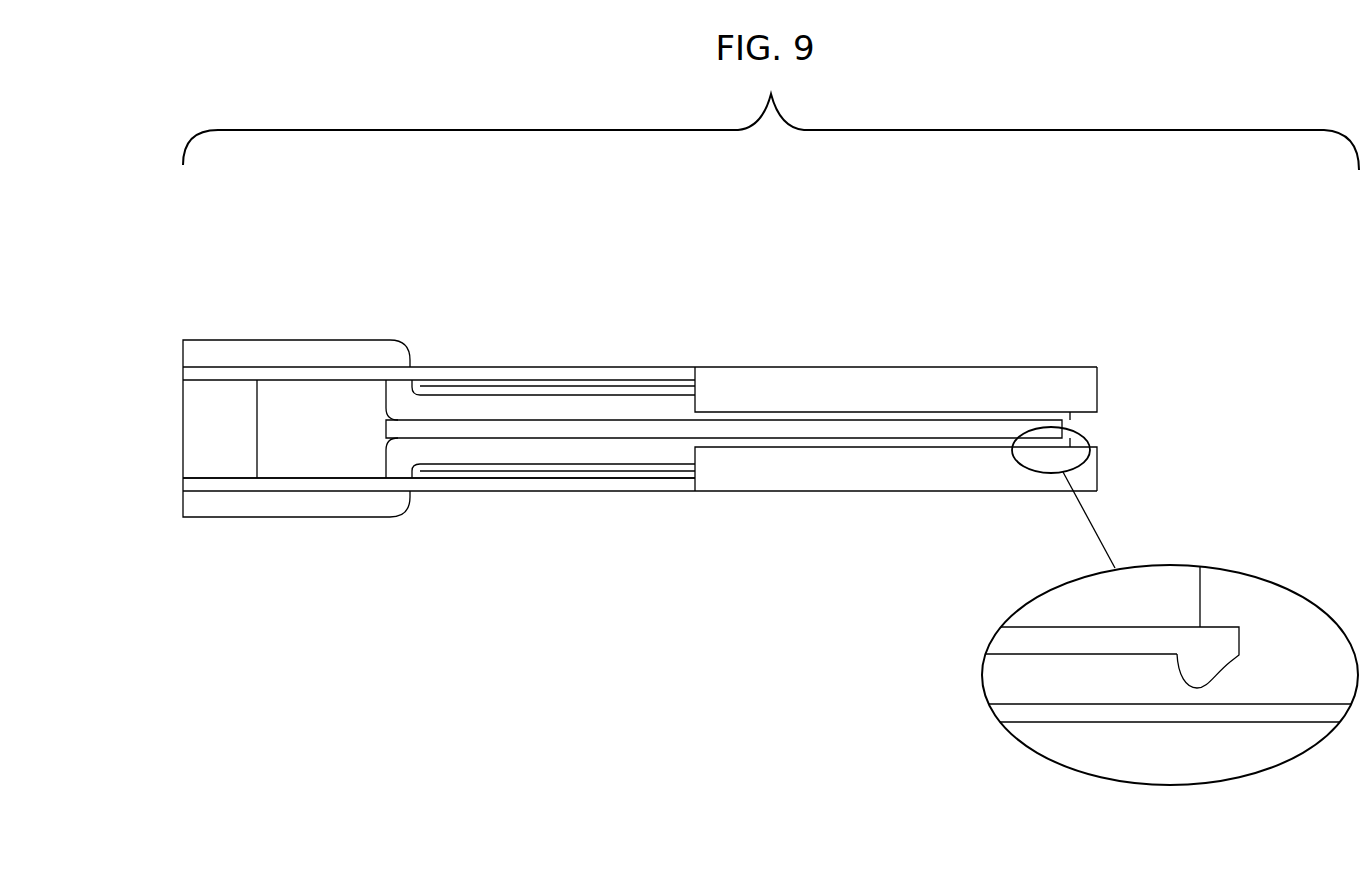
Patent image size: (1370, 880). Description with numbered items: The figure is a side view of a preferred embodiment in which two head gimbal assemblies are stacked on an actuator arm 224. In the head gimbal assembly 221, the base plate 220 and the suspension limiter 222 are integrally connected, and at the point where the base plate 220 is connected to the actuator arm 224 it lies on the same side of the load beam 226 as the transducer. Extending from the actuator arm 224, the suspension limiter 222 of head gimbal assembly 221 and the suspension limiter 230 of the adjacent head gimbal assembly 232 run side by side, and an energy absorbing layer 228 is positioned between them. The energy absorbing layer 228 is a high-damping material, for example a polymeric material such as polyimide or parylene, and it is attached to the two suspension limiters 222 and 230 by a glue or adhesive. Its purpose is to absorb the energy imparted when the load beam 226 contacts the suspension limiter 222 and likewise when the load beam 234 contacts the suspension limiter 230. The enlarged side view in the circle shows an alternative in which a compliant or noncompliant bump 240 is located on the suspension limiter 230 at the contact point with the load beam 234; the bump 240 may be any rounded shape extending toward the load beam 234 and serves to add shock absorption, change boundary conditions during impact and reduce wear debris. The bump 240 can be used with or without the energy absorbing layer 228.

The base plate 220 is at (279, 332).
The head gimbal assembly 221 is at (632, 354).
The suspension limiter 222 is at (525, 391).
The actuator arm 224 is at (197, 426).
The load beam 226 is at (440, 356).
The energy absorbing layer 228 is at (649, 413).
The suspension limiter 230 is at (484, 468).
The head gimbal assembly 232 is at (545, 511).
The load beam 234 is at (641, 500).
The bump 240 is at (1211, 668).